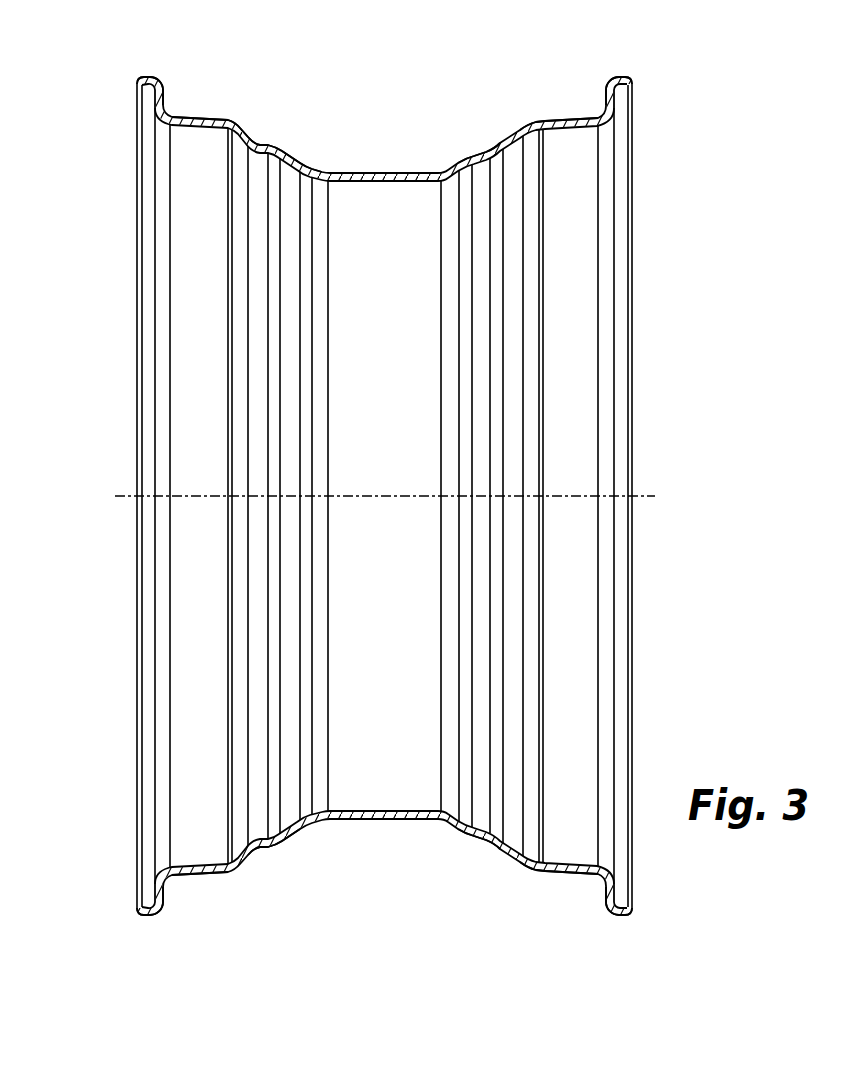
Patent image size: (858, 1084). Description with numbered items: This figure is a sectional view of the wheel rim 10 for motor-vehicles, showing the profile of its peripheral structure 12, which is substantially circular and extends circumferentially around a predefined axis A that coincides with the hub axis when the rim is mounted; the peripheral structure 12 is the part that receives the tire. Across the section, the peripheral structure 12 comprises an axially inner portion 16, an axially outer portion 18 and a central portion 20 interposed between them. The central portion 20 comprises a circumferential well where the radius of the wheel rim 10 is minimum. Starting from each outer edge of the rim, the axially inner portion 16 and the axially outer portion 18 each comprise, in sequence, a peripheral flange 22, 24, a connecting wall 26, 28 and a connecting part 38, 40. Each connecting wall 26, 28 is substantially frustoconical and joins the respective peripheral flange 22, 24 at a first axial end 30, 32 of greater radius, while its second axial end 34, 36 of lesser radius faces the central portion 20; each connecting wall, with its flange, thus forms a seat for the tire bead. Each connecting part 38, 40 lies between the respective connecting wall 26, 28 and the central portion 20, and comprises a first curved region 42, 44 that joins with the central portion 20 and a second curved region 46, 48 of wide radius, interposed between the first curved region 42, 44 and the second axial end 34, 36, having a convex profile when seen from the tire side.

The wheel rim 10 is at (679, 419).
The peripheral structure 12 is at (430, 167).
The axially inner portion 16 is at (559, 880).
The axially outer portion 18 is at (217, 879).
The central portion 20 is at (377, 828).
The peripheral flange 22 is at (628, 910).
The peripheral flange 24 is at (138, 910).
The connecting wall 26 is at (580, 117).
The connecting wall 28 is at (197, 117).
The first axial end 30 is at (597, 120).
The first axial end 32 is at (177, 120).
The second axial end 34 is at (545, 118).
The second axial end 36 is at (237, 126).
The connecting part 38 is at (488, 144).
The connecting part 40 is at (289, 146).
The first curved region 42 is at (477, 842).
The first curved region 44 is at (295, 844).
The second curved region 46 is at (522, 865).
The second curved region 48 is at (247, 133).